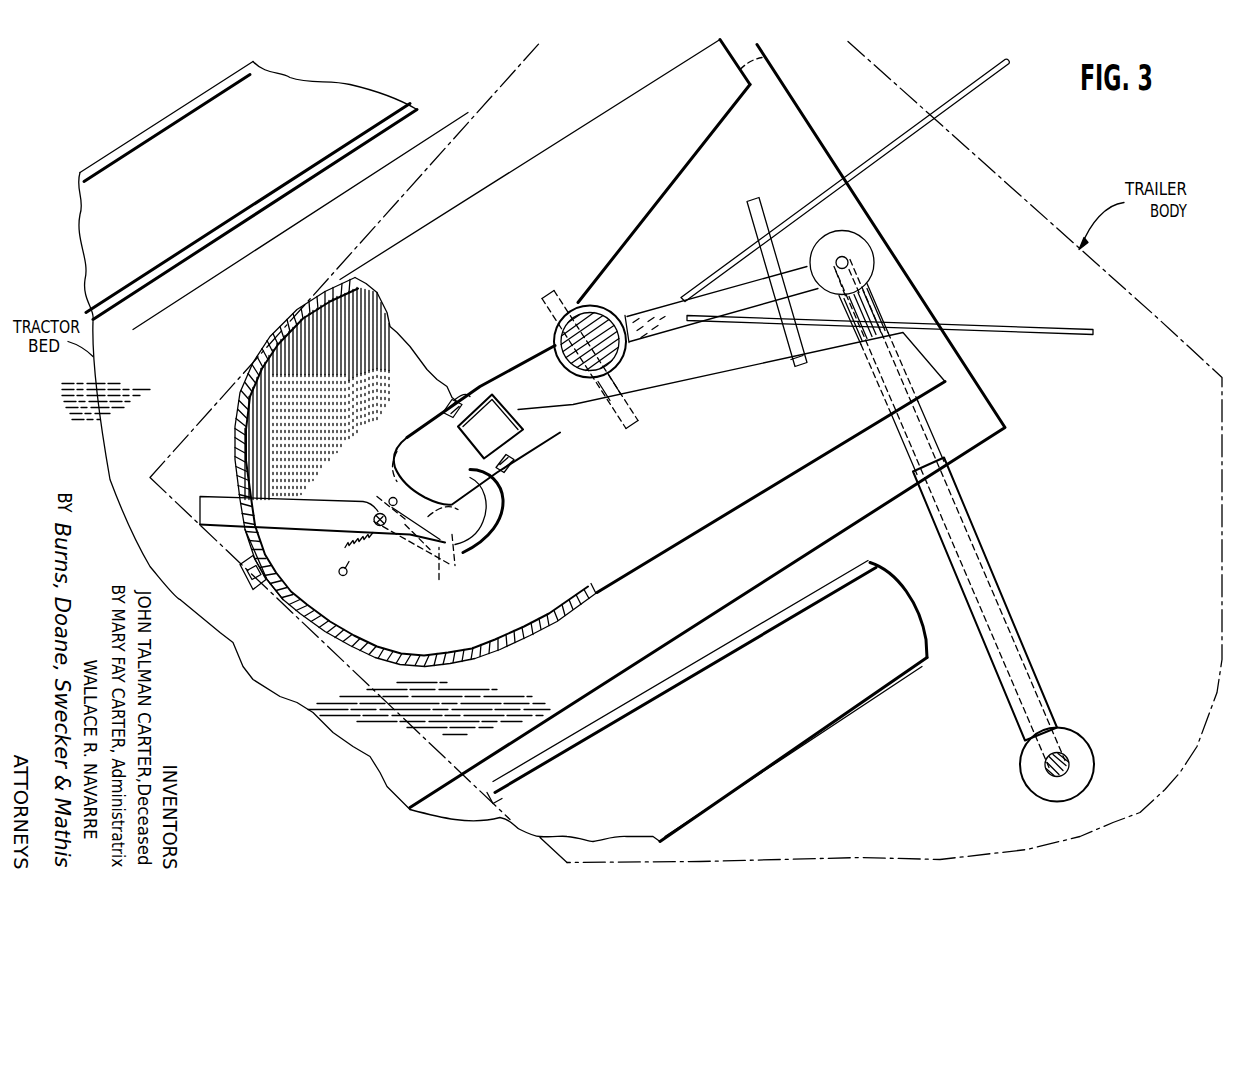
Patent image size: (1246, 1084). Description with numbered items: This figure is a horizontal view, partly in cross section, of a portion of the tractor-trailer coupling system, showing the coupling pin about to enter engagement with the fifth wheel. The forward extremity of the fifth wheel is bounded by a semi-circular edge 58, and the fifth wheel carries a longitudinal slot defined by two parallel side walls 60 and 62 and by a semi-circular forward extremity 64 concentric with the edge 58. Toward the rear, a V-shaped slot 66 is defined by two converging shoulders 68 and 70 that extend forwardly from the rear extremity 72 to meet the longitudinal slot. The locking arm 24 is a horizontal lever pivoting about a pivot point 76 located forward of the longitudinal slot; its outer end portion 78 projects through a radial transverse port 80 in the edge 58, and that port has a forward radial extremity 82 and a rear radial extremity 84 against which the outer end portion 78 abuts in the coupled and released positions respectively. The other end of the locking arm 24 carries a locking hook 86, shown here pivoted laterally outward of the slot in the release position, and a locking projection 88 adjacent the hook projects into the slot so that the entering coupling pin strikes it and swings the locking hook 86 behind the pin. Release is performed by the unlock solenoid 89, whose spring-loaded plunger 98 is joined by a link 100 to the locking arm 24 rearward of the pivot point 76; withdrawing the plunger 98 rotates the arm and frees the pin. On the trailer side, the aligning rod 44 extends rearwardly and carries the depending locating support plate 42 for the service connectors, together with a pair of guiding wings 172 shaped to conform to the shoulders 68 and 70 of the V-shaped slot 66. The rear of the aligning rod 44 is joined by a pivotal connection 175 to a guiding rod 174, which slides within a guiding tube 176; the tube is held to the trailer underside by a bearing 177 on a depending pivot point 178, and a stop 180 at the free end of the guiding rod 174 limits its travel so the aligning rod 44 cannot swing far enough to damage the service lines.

The locking arm 24 is at (414, 550).
The locating support plate 42 is at (760, 205).
The aligning rod 44 is at (652, 312).
The semi-circular edge 58 is at (235, 464).
The side wall 60 is at (503, 470).
The side wall 62 is at (450, 405).
The semi-circular forward extremity 64 is at (405, 452).
The V-shaped slot 66 is at (695, 158).
The shoulder 68 is at (742, 370).
The shoulder 70 is at (652, 208).
The rear extremity 72 is at (760, 63).
The pivot point 76 is at (377, 512).
The outer end portion 78 is at (230, 505).
The radial transverse port 80 is at (250, 542).
The forward radial extremity 82 is at (288, 603).
The rear radial extremity 84 is at (248, 503).
The locking hook 86 is at (487, 545).
The locking projection 88 is at (400, 468).
The unlock solenoid 89 is at (440, 574).
The plunger 98 is at (432, 516).
The link 100 is at (370, 554).
The guiding wings 172 is at (896, 144).
The guiding rod 174 is at (925, 432).
The pivotal connection 175 is at (865, 250).
The guiding tube 176 is at (1016, 707).
The bearing 177 is at (1081, 737).
The depending pivot point 178 is at (1080, 775).
The stop 180 is at (1032, 783).